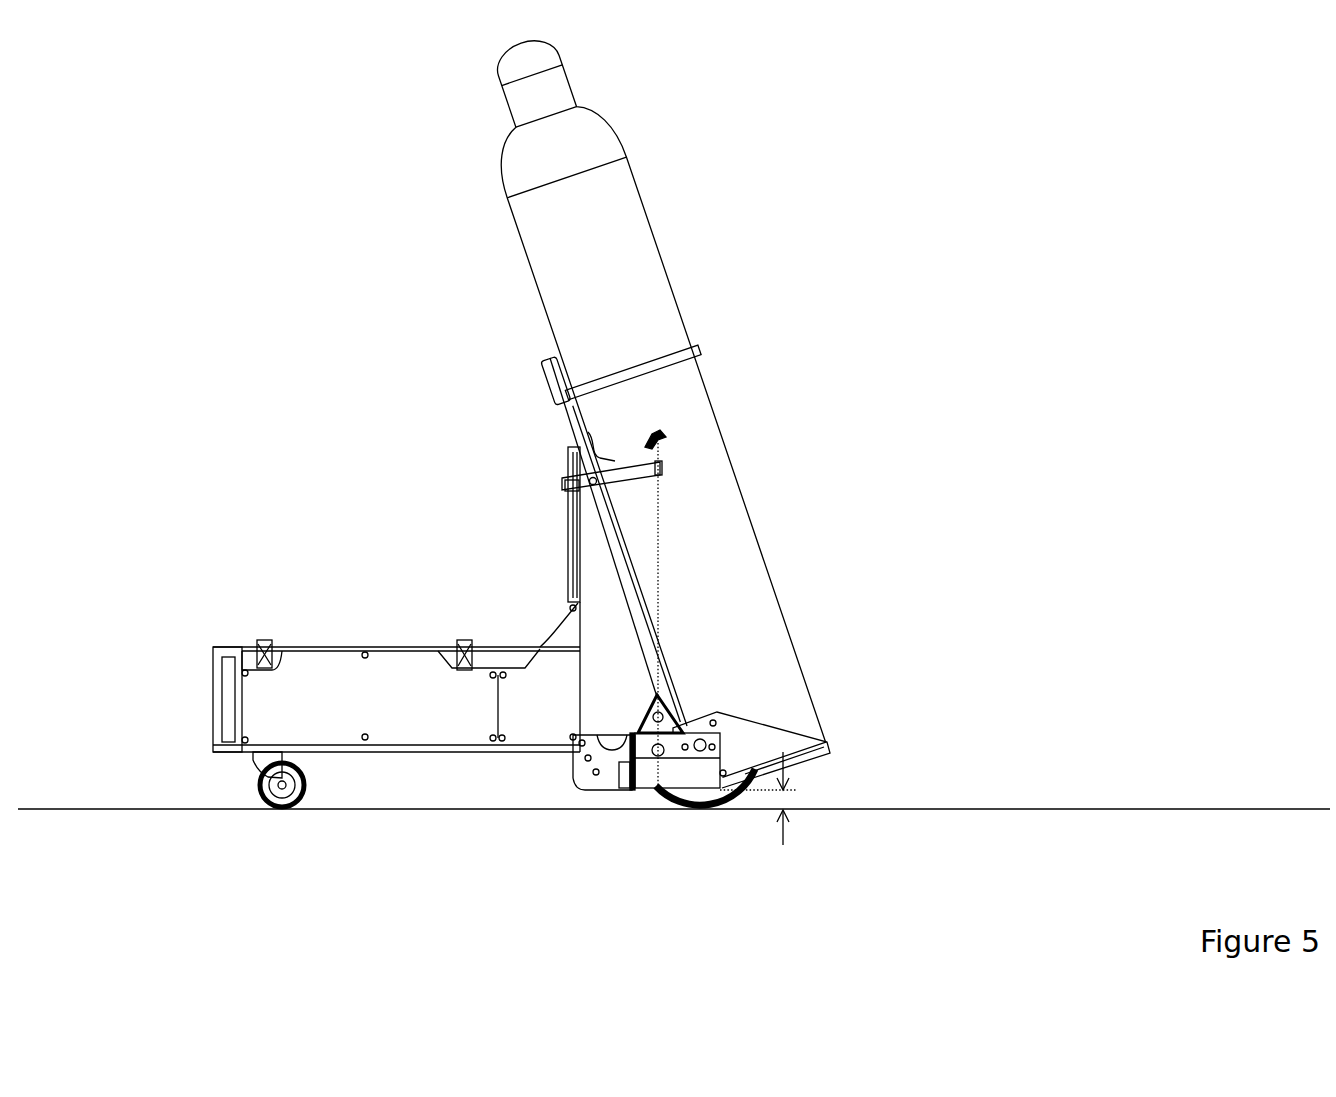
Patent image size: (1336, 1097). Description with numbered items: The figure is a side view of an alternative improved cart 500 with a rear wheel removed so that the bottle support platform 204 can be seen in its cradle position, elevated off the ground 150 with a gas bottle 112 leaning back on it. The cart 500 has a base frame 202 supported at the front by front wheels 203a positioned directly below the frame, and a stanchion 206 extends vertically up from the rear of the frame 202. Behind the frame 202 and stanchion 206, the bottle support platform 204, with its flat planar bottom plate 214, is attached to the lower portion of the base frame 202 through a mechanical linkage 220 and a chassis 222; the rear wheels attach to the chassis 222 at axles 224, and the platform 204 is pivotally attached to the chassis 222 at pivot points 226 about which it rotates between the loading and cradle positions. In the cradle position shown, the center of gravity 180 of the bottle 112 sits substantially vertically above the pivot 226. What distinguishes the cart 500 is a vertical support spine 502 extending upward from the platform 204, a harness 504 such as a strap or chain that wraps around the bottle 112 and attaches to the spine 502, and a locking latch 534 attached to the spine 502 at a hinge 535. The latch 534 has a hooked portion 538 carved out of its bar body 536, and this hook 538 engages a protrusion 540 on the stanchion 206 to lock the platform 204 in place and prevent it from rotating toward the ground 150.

The improved cart 500 is at (362, 152).
The bottle 112 is at (598, 188).
The harness 504 is at (700, 346).
The vertical support spine 502 is at (547, 380).
The center of gravity 180 is at (656, 438).
The locking latch 534 is at (672, 466).
The hinge 535 is at (608, 479).
The bar body 536 is at (640, 466).
The hooked portion 538 is at (585, 478).
The protrusion 540 is at (560, 488).
The stanchion 206 is at (568, 556).
The base frame 202 is at (313, 673).
The front wheels 203a is at (286, 810).
The ground 150 is at (434, 811).
The bottle support platform 204 is at (762, 723).
The bottom plate 214 is at (828, 748).
The mechanical linkage 220 is at (583, 776).
The chassis 222 is at (660, 770).
The axles 224 is at (706, 762).
The pivot points 226 is at (663, 792).